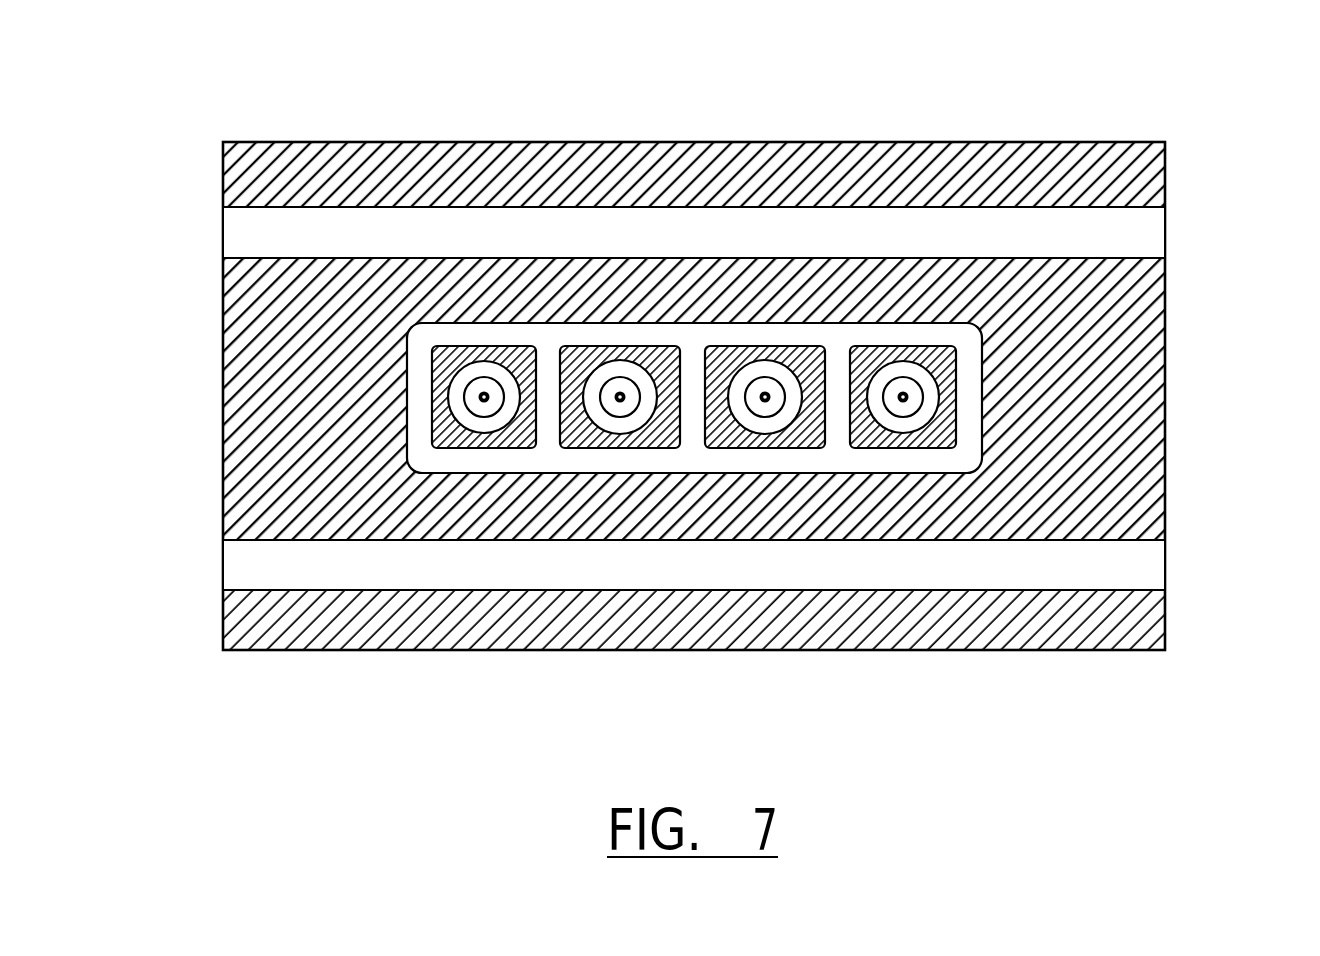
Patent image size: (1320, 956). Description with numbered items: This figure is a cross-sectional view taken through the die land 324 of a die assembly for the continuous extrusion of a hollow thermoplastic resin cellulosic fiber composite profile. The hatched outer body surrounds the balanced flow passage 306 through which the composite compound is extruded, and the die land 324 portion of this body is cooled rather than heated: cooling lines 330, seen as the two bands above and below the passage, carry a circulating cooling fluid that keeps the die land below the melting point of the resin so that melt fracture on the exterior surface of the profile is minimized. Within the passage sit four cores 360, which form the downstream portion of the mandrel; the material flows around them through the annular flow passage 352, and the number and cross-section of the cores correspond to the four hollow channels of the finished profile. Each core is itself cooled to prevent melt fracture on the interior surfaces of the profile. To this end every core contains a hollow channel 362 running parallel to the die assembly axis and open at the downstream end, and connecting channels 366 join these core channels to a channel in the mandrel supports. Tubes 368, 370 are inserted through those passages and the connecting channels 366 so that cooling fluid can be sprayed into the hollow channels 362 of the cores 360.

The die land 324 is at (694, 333).
The cooling lines 330 is at (694, 398).
The annular flow passage 352 is at (723, 279).
The balanced flow passage 306 is at (750, 247).
The cores 360 is at (861, 265).
The hollow channels 362 is at (709, 379).
The connecting channels 366 is at (729, 376).
The tube 368 is at (478, 396).
The tube 370 is at (614, 398).